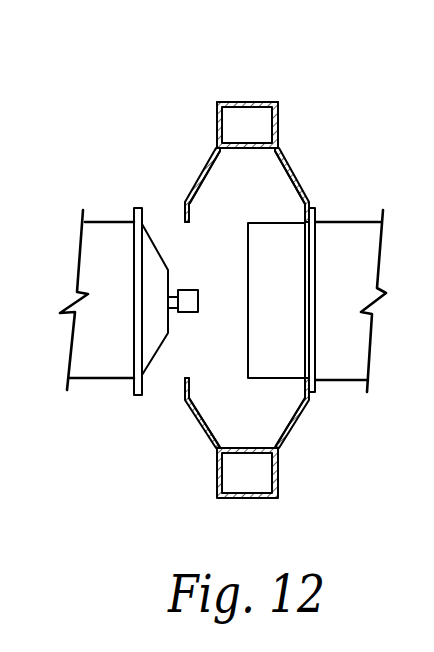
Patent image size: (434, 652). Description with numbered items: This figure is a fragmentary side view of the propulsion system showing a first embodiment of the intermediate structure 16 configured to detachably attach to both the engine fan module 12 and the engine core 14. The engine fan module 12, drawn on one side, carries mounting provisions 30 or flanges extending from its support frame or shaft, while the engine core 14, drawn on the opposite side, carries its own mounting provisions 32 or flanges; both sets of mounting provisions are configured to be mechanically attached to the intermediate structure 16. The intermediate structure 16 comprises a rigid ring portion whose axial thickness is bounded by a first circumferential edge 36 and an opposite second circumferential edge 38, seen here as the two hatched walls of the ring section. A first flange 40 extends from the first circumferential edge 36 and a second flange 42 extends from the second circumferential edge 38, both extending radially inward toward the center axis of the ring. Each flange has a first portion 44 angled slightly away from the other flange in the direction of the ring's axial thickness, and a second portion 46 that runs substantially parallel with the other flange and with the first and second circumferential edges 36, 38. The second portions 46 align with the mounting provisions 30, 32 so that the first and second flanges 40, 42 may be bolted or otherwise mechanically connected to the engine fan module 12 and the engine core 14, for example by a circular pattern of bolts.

The engine fan module 12 is at (355, 222).
The engine core 14 is at (99, 221).
The intermediate structure 16 is at (237, 103).
The mounting provisions 30 is at (313, 262).
The mounting provisions 32 is at (140, 212).
The first circumferential edge 36 is at (279, 120).
The second circumferential edge 38 is at (216, 113).
The first flange 40 is at (289, 167).
The second flange 42 is at (190, 188).
The first portions 44 is at (292, 165).
The second portions 46 is at (189, 223).